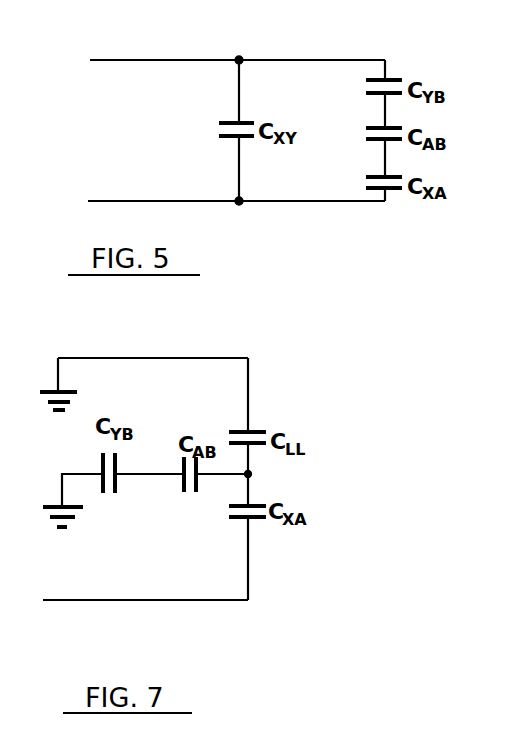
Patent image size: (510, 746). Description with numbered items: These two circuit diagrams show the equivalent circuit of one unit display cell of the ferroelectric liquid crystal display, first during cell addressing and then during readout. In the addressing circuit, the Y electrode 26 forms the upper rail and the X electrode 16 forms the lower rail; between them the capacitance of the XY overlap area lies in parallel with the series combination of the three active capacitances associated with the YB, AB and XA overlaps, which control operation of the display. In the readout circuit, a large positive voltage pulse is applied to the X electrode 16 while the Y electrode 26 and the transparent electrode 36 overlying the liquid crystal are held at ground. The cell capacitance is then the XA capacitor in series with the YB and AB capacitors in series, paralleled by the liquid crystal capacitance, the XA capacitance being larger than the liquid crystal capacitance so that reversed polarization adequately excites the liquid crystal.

In FIG. 5, the Y electrode 26 is at (173, 38).
In FIG. 7, the Y electrode 26 is at (72, 473).
In FIG. 5, the X electrode 16 is at (197, 201).
In FIG. 7, the X electrode 16 is at (118, 600).
In FIG. 7, the transparent electrode 36 is at (126, 358).